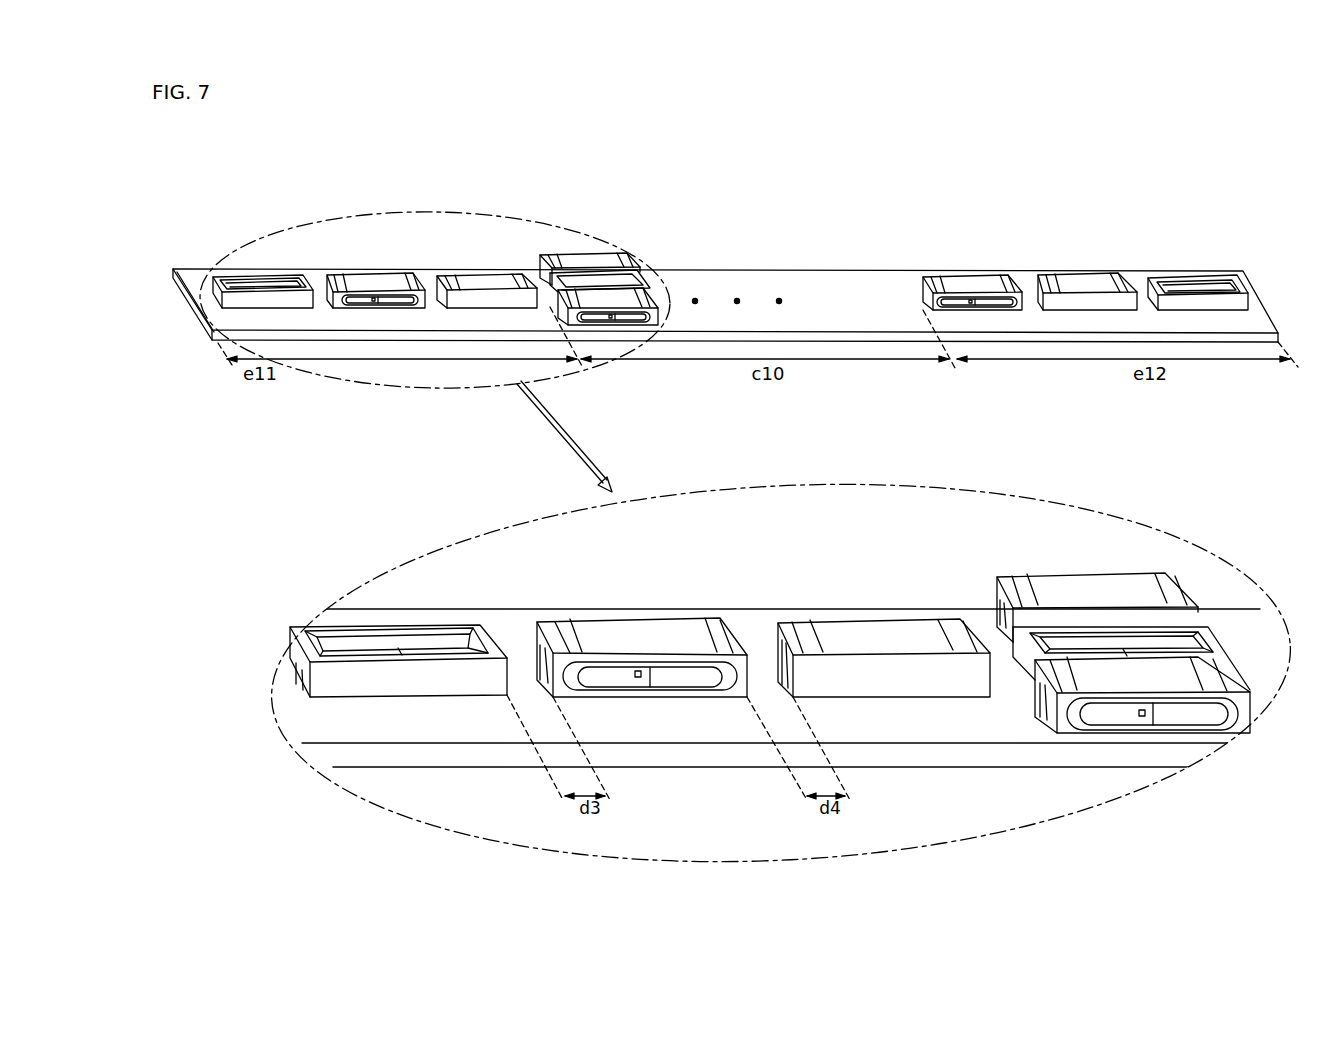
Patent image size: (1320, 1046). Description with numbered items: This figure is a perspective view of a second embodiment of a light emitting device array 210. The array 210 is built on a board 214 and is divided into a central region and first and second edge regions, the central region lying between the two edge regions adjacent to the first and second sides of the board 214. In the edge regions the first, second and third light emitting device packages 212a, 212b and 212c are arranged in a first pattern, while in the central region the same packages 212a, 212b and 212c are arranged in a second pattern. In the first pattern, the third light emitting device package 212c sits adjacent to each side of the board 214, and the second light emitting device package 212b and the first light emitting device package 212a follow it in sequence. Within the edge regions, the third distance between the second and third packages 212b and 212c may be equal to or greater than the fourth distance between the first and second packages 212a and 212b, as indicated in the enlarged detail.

The light emitting device array 210 is at (1148, 235).
The first light emitting device package 212a is at (478, 280).
The second light emitting device package 212b is at (358, 278).
The third light emitting device package 212c is at (253, 280).
The board 214 is at (1219, 272).